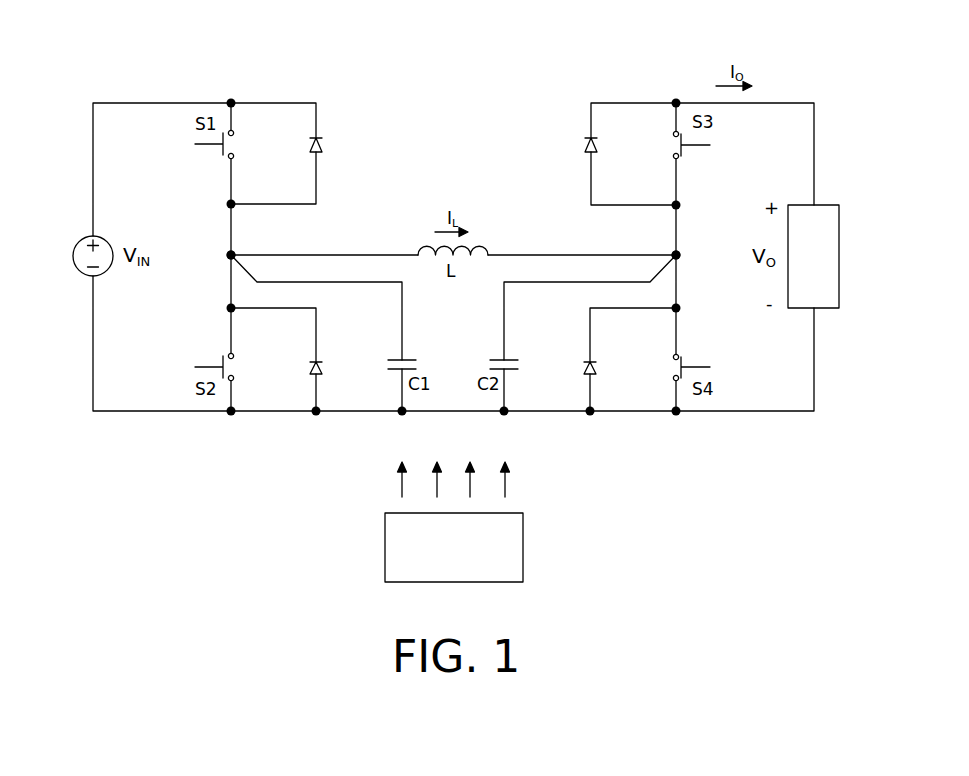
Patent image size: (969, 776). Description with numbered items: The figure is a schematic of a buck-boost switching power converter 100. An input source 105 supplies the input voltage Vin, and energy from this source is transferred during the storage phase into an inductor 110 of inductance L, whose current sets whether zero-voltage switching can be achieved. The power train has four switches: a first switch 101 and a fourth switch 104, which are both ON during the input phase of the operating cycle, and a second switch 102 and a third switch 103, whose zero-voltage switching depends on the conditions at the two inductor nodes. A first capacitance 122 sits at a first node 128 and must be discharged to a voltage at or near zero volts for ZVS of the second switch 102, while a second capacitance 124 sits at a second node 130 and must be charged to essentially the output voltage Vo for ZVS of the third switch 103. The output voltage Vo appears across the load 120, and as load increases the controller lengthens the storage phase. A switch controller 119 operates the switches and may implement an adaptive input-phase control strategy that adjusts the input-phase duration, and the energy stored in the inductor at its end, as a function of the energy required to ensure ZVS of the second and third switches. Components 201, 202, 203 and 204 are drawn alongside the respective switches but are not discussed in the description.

The buck-boost switching power converter 100 is at (245, 66).
The switch S1 101 is at (223, 152).
The switch S2 102 is at (223, 357).
The switch S3 103 is at (684, 152).
The switch S4 104 is at (683, 357).
The input source 105 is at (88, 237).
The inductor 110 is at (481, 250).
The switch controller 119 is at (505, 513).
The load 120 is at (820, 205).
The capacitance C1 122 is at (396, 360).
The capacitance C2 124 is at (511, 360).
The node 128 is at (228, 254).
The node 130 is at (679, 254).
The first diode 201 is at (322, 145).
The second diode 202 is at (313, 367).
The third diode 203 is at (585, 145).
The fourth diode 204 is at (597, 367).